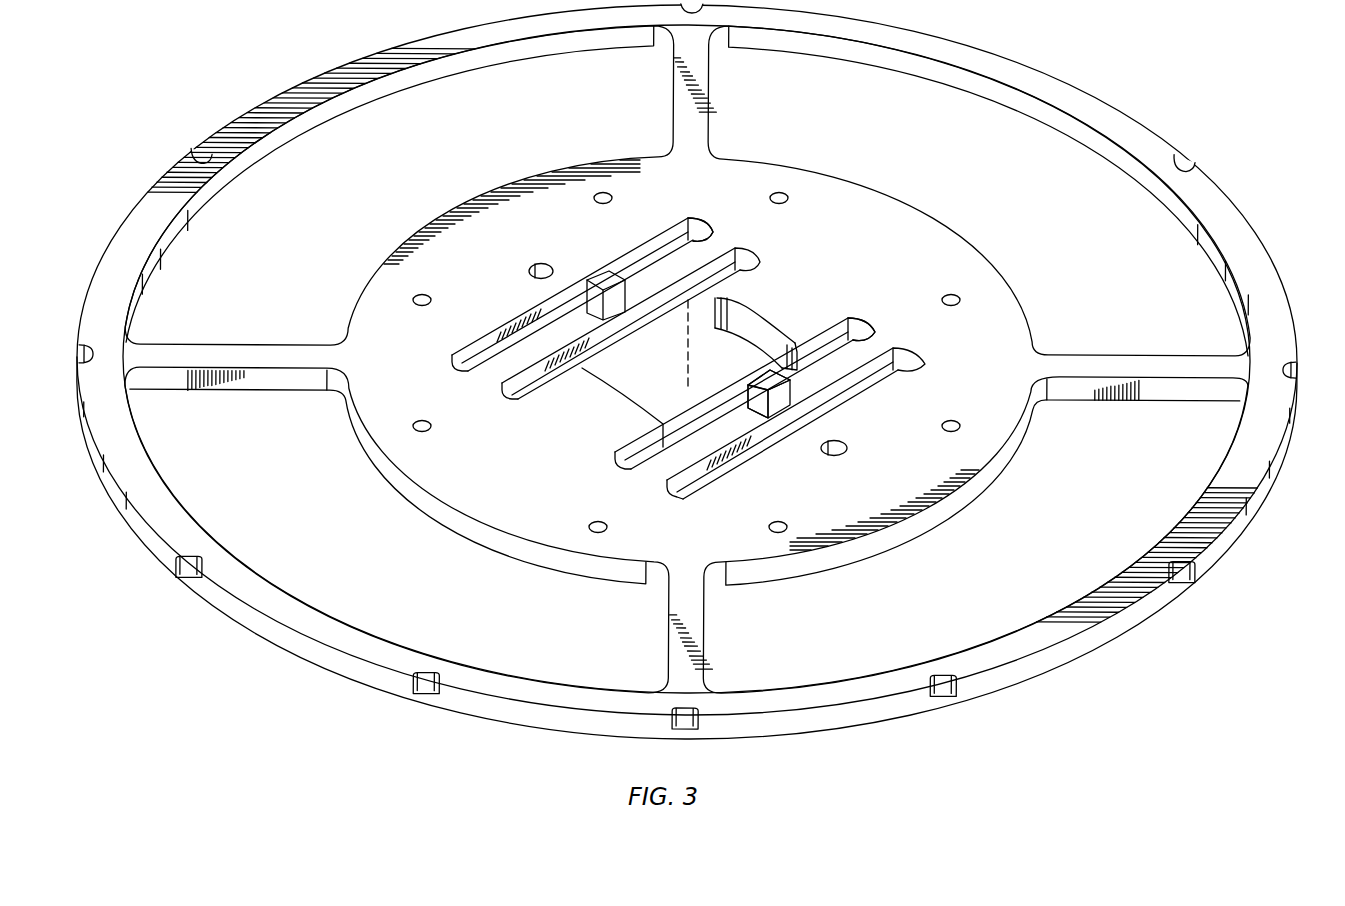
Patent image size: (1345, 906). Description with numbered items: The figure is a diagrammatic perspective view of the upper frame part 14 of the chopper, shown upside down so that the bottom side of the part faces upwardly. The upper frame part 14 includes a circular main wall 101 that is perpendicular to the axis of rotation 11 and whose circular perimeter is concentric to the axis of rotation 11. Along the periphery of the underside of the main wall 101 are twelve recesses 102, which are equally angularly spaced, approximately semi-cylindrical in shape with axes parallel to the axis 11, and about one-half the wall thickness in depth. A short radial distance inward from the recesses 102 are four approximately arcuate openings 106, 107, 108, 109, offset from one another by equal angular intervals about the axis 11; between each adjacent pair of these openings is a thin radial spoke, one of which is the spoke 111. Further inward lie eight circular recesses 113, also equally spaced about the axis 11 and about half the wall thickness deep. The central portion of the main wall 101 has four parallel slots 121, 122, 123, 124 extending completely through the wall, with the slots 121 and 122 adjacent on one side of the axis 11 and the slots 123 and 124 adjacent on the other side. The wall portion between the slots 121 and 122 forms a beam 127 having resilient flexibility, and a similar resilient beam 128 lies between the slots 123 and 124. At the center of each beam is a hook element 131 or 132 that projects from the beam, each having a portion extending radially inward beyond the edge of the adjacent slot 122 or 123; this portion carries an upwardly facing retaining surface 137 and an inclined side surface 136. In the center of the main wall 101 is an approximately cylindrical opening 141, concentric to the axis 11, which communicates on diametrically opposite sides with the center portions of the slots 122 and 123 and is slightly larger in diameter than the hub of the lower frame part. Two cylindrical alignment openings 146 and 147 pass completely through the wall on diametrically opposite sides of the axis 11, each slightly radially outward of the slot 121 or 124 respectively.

The upper frame part 14 is at (1264, 254).
The main wall 101 is at (889, 250).
The recesses 102 is at (175, 566).
The opening 106 is at (383, 637).
The opening 107 is at (995, 640).
The opening 108 is at (1052, 118).
The opening 109 is at (311, 124).
The radial spoke 111 is at (676, 116).
The circular recesses 113 is at (953, 413).
The slot 121 is at (498, 327).
The slot 122 is at (502, 378).
The slot 123 is at (620, 450).
The slot 124 is at (660, 480).
The beam 127 is at (720, 242).
The beam 128 is at (885, 340).
The hook element 131 is at (603, 285).
The hook element 132 is at (780, 407).
The inclined side surface 136 is at (747, 387).
The retaining surface 137 is at (747, 404).
The opening 141 is at (753, 327).
The alignment opening 146 is at (528, 270).
The alignment opening 147 is at (840, 440).
The axis of rotation 11 is at (687, 365).